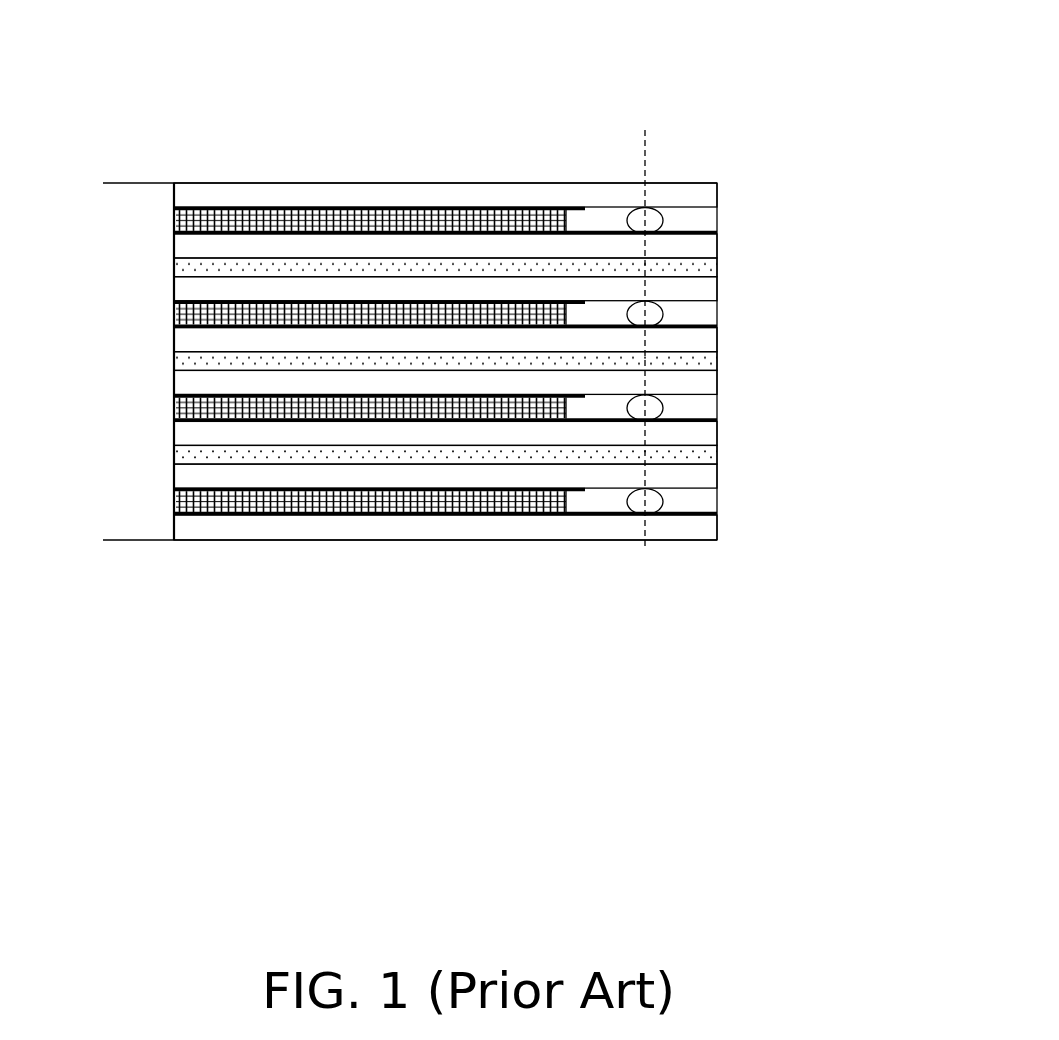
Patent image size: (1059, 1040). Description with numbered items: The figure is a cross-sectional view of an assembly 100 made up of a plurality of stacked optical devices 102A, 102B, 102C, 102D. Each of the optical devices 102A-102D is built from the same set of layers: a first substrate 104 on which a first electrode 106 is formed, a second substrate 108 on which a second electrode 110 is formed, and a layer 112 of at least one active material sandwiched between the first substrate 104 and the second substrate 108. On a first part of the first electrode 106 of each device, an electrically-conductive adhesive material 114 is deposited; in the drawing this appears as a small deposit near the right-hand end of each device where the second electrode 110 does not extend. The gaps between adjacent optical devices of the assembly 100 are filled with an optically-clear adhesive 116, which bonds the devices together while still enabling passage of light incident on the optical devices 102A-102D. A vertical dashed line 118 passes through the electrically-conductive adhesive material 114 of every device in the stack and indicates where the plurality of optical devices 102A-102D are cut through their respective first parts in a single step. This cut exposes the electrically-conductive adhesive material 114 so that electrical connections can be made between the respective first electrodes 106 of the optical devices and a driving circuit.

The assembly 100 is at (753, 65).
The optical device 102A is at (166, 185).
The optical device 102B is at (166, 279).
The optical device 102C is at (166, 372).
The optical device 102D is at (166, 466).
The first substrate 104 is at (706, 263).
The first electrode 106 is at (706, 238).
The second substrate 108 is at (329, 196).
The second electrode 110 is at (404, 207).
The layer of at least one active material 112 is at (532, 217).
The electrically-conductive adhesive material 114 is at (649, 217).
The optically-clear adhesive 116 is at (706, 247).
The dashed line 118 is at (648, 552).